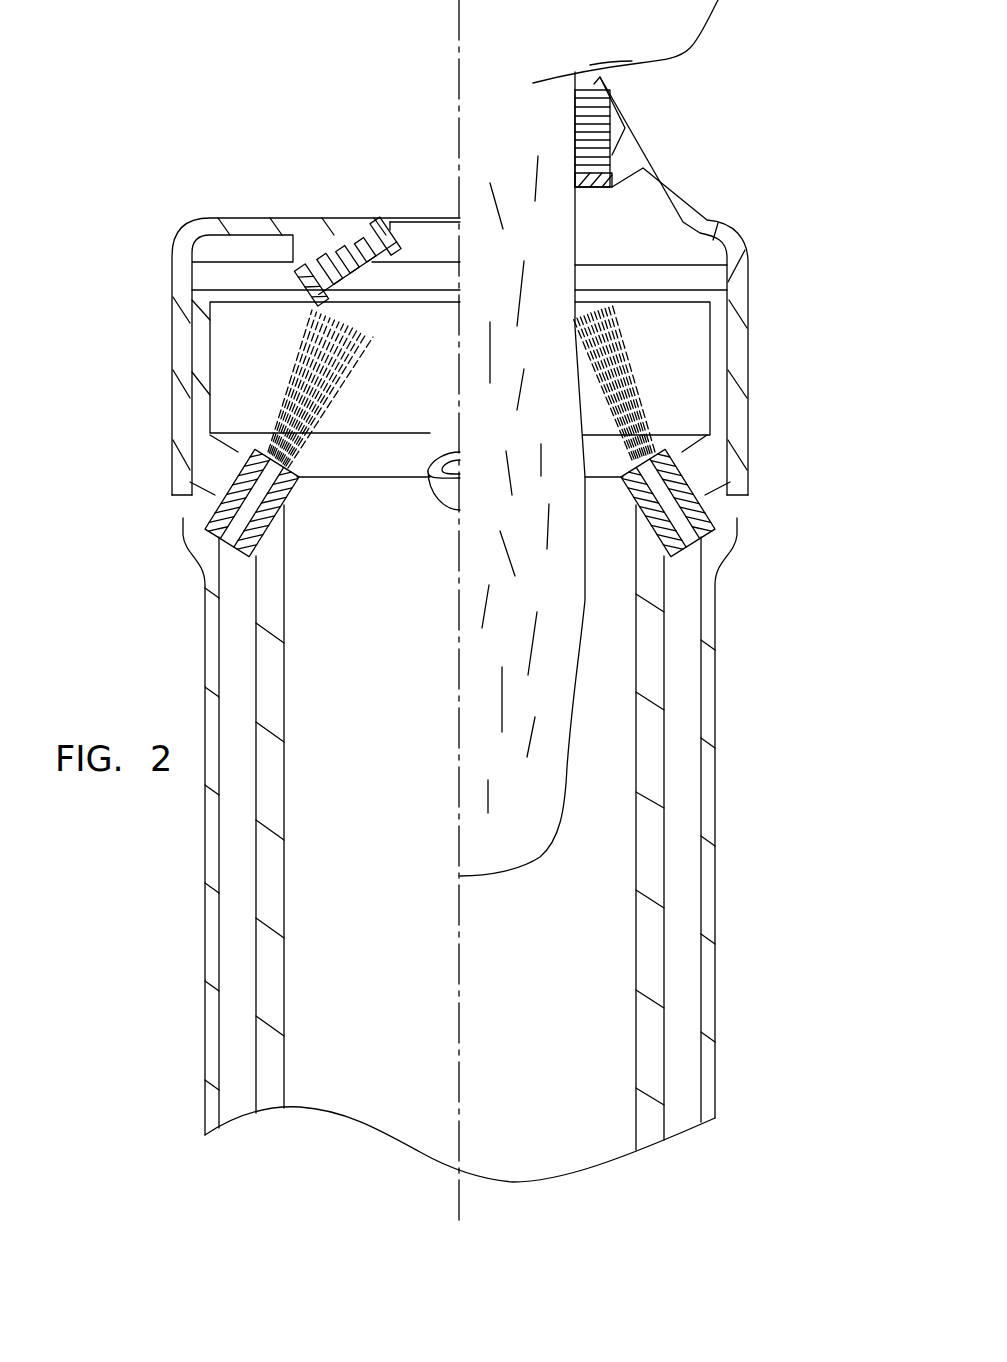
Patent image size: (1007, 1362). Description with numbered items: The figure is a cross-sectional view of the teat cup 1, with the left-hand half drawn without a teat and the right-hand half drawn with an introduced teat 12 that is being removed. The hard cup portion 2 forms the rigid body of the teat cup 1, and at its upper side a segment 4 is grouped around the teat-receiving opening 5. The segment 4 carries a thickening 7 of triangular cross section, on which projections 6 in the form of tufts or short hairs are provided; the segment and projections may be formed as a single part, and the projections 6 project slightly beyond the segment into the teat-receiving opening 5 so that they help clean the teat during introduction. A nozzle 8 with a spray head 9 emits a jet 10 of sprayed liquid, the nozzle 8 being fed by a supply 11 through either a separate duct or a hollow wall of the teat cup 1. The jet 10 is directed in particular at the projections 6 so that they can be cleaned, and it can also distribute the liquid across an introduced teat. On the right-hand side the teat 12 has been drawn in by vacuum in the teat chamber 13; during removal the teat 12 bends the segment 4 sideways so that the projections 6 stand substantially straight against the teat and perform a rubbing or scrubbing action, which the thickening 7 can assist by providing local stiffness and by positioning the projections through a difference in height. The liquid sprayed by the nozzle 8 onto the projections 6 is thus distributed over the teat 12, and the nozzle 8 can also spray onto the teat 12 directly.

The teat cup 1 is at (735, 690).
The hard cup portion 2 is at (210, 810).
The segment 4 is at (237, 223).
The teat-receiving opening 5 is at (433, 220).
The projections 6 is at (312, 283).
The thickening 7 is at (313, 240).
The nozzle 8 is at (222, 513).
The spray head 9 is at (270, 455).
The jet 10 is at (322, 375).
The supply 11 is at (238, 699).
The teat 12 is at (557, 638).
The teat chamber 13 is at (603, 753).